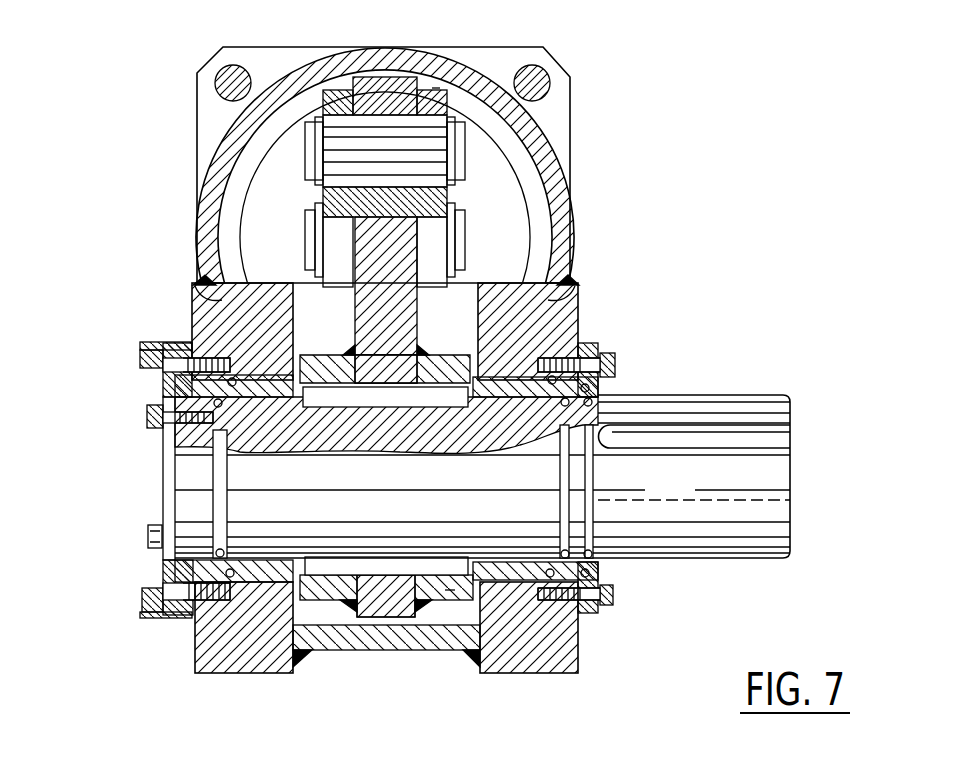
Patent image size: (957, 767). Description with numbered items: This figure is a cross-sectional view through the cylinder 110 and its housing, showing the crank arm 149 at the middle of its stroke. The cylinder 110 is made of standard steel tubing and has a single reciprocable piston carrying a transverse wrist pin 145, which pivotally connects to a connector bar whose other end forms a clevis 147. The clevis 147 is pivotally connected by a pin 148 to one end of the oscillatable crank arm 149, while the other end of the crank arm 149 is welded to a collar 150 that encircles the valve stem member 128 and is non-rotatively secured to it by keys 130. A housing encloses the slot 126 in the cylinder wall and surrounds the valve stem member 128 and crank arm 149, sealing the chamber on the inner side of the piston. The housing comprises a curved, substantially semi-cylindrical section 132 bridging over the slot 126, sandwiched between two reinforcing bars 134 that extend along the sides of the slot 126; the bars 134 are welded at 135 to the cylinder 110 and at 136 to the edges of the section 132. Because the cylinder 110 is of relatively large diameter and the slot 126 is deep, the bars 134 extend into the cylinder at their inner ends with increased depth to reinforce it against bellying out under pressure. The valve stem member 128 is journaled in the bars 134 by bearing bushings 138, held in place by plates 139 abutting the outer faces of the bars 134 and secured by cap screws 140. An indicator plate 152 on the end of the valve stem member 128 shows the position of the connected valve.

The cylinder 110 is at (586, 161).
The slot 126 is at (197, 303).
The valve stem member 128 is at (690, 504).
The keys 130 is at (423, 395).
The curved substantially semi-cylindrical section 132 is at (418, 642).
The reinforcing bars 134 is at (228, 663).
The weld 135 is at (202, 280).
The weld 136 is at (305, 655).
The bearing bushings 138 is at (263, 565).
The plates 139 is at (187, 343).
The cap screws 140 is at (613, 362).
The wrist pin 145 is at (456, 232).
The clevis 147 is at (432, 88).
The pin 148 is at (422, 132).
The crank arm 149 is at (372, 325).
The collar 150 is at (448, 585).
The indicator plate 152 is at (170, 497).